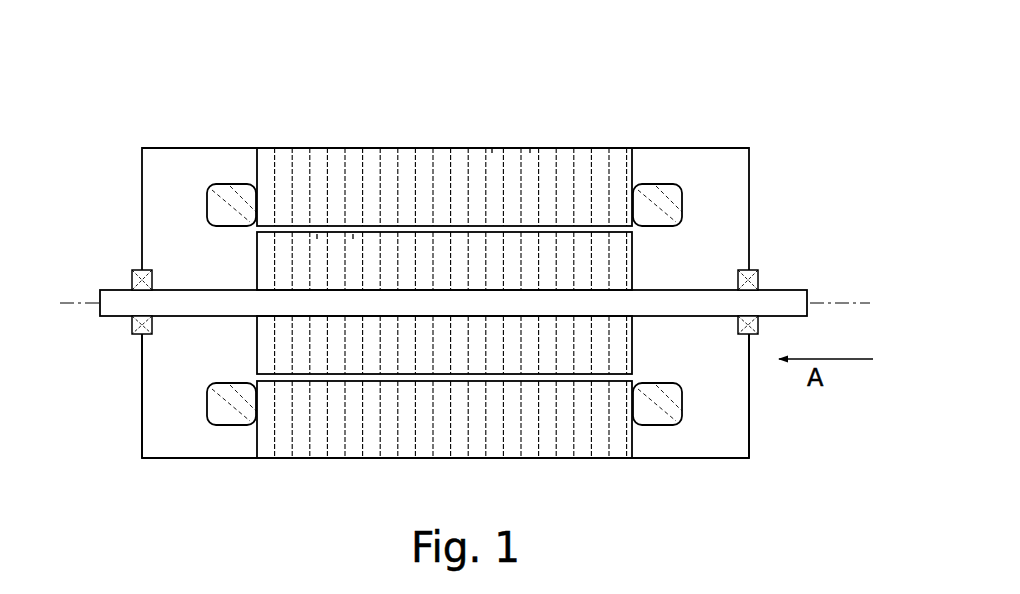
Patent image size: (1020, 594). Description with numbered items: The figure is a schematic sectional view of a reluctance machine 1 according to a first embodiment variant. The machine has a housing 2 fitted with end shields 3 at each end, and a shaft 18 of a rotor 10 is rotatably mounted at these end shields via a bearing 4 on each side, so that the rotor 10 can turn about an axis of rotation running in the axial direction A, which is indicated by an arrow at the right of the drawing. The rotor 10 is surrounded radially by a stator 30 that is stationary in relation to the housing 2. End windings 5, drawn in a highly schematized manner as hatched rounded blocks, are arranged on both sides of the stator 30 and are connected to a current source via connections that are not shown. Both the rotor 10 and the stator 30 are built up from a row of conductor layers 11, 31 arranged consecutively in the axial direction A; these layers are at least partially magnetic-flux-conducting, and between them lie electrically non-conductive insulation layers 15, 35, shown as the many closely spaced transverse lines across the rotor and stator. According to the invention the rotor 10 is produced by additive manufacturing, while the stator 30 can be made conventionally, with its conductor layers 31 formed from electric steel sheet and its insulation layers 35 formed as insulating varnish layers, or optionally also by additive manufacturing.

The reluctance machine 1 is at (641, 88).
The housing 2 is at (703, 150).
The end shields 3 is at (128, 348).
The bearing 4 is at (132, 278).
The end windings 5 is at (210, 188).
The rotor 10 is at (359, 226).
The conductor layers 11 is at (302, 239).
The insulation layers 15 is at (317, 239).
The shaft 18 is at (697, 292).
The stator 30 is at (407, 255).
The conductor layers 31 is at (478, 148).
The insulation layers 35 is at (492, 148).